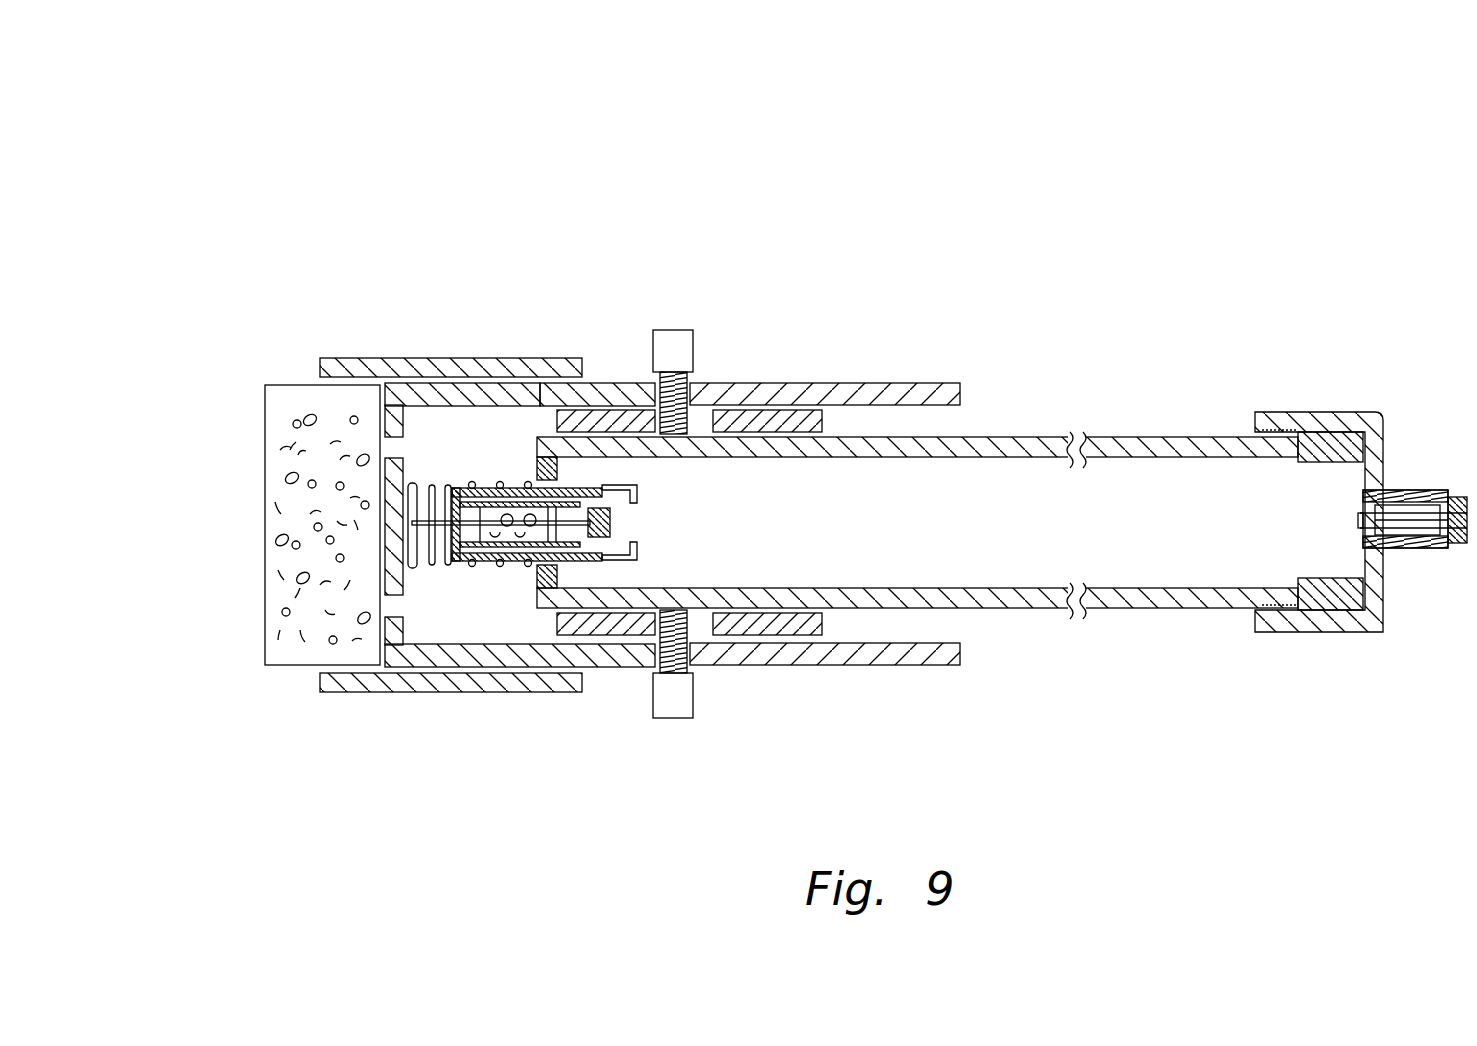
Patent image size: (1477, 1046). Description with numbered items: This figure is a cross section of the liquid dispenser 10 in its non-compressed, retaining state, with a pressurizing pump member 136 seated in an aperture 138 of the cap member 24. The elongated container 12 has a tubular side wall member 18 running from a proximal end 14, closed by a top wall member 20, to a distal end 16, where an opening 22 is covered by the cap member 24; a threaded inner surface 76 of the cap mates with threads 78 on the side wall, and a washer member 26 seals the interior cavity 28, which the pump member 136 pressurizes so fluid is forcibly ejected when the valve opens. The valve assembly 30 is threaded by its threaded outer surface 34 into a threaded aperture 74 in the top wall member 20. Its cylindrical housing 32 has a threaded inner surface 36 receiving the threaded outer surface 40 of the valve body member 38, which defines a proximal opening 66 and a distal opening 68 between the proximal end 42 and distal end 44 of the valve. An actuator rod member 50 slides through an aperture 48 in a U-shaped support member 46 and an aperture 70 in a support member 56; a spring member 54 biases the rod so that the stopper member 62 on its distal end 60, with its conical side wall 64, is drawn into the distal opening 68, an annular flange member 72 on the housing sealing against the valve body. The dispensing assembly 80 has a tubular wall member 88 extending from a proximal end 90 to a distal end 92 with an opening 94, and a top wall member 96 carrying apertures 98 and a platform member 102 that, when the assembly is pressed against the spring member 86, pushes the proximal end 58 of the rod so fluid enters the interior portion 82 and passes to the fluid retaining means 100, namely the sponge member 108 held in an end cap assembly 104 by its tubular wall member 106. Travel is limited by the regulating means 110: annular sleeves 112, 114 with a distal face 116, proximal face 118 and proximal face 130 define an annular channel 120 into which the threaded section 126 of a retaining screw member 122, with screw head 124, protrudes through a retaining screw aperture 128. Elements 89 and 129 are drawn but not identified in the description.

The dispenser 10 is at (650, 160).
The elongated container 12 is at (1037, 437).
The proximal end 14 is at (530, 358).
The distal end 16 is at (1247, 460).
The side wall member 18 is at (1043, 437).
The top wall member 20 is at (578, 383).
The opening 22 is at (1213, 460).
The cap member 24 is at (1344, 446).
The washer member 26 is at (1322, 437).
The interior cavity 28 is at (1100, 460).
The valve assembly 30 is at (485, 632).
The cylindrical housing 32 is at (594, 390).
The threaded outer surface 34 is at (524, 568).
The threaded inner surface 36 is at (536, 562).
The valve body member 38 is at (612, 600).
The threaded outer surface 40 is at (575, 600).
The proximal end 42 is at (467, 578).
The distal end 44 is at (613, 640).
The U-shaped support member 46 is at (462, 484).
The aperture 48 is at (450, 568).
The actuator rod member 50 is at (432, 568).
The spring member 54 is at (500, 568).
The support member 56 is at (516, 488).
The proximal end 58 is at (407, 620).
The distal end 60 is at (573, 487).
The stopper member 62 is at (600, 517).
The conical side wall 64 is at (612, 488).
The proximal opening 66 is at (478, 482).
The distal opening 68 is at (630, 545).
The aperture 70 is at (590, 600).
The annular flange member 72 is at (605, 540).
The threaded aperture 74 is at (493, 485).
The threaded inner surface 76 is at (1283, 437).
The threads 78 is at (1290, 463).
The dispensing assembly 80 is at (625, 277).
The interior portion 82 is at (405, 400).
The spring member 86 is at (430, 395).
The tubular wall member 88 is at (445, 400).
The passage 89 is at (592, 558).
The proximal end 90 is at (372, 529).
The distal end 92 is at (905, 347).
The opening 94 is at (955, 417).
The top wall member 96 is at (337, 403).
The aperture 98 is at (385, 445).
The fluid retaining means 100 is at (242, 508).
The platform member 102 is at (410, 515).
The end cap assembly 104 is at (338, 740).
The tubular wall member 106 is at (348, 690).
The sponge member 108 is at (297, 652).
The regulating means 110 is at (643, 382).
The annular sleeve 112 is at (610, 382).
The annular sleeve 114 is at (835, 383).
The distal face 116 is at (687, 680).
The proximal face 118 is at (720, 382).
The annular channel 120 is at (697, 425).
The retaining screw member 122 is at (697, 382).
The screw head 124 is at (785, 300).
The threaded section 126 is at (668, 708).
The retaining screw aperture 128 is at (747, 382).
The spacer block 129 is at (686, 350).
The proximal face 130 is at (542, 358).
The pressurizing pump member 136 is at (1418, 487).
The aperture 138 is at (1383, 555).